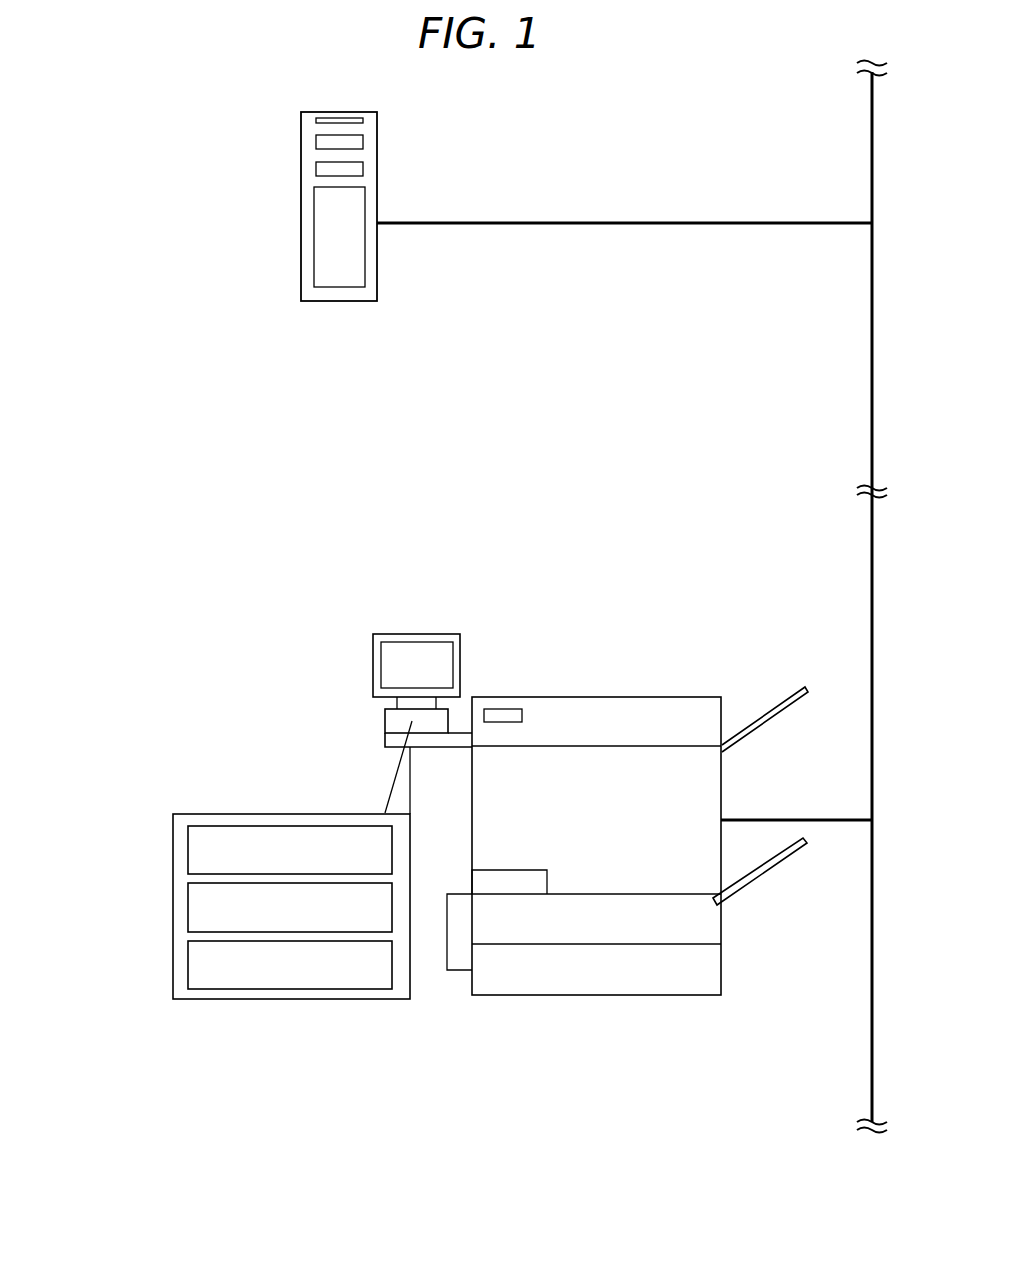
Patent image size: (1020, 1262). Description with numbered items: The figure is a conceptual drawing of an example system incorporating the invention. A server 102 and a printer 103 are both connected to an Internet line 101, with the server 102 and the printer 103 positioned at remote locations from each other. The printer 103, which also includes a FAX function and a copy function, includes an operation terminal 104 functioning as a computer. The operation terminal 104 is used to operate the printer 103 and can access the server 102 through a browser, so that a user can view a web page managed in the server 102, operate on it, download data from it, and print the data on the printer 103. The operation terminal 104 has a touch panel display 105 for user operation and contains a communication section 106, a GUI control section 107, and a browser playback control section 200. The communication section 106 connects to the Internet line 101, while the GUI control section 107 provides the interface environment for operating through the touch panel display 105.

The Internet line 101 is at (870, 130).
The server 102 is at (378, 131).
The printer 103 is at (656, 696).
The operation terminal 104 is at (383, 723).
The touch panel display 105 is at (390, 660).
The communication section 106 is at (188, 852).
The GUI control section 107 is at (188, 915).
The browser playback control section 200 is at (188, 972).